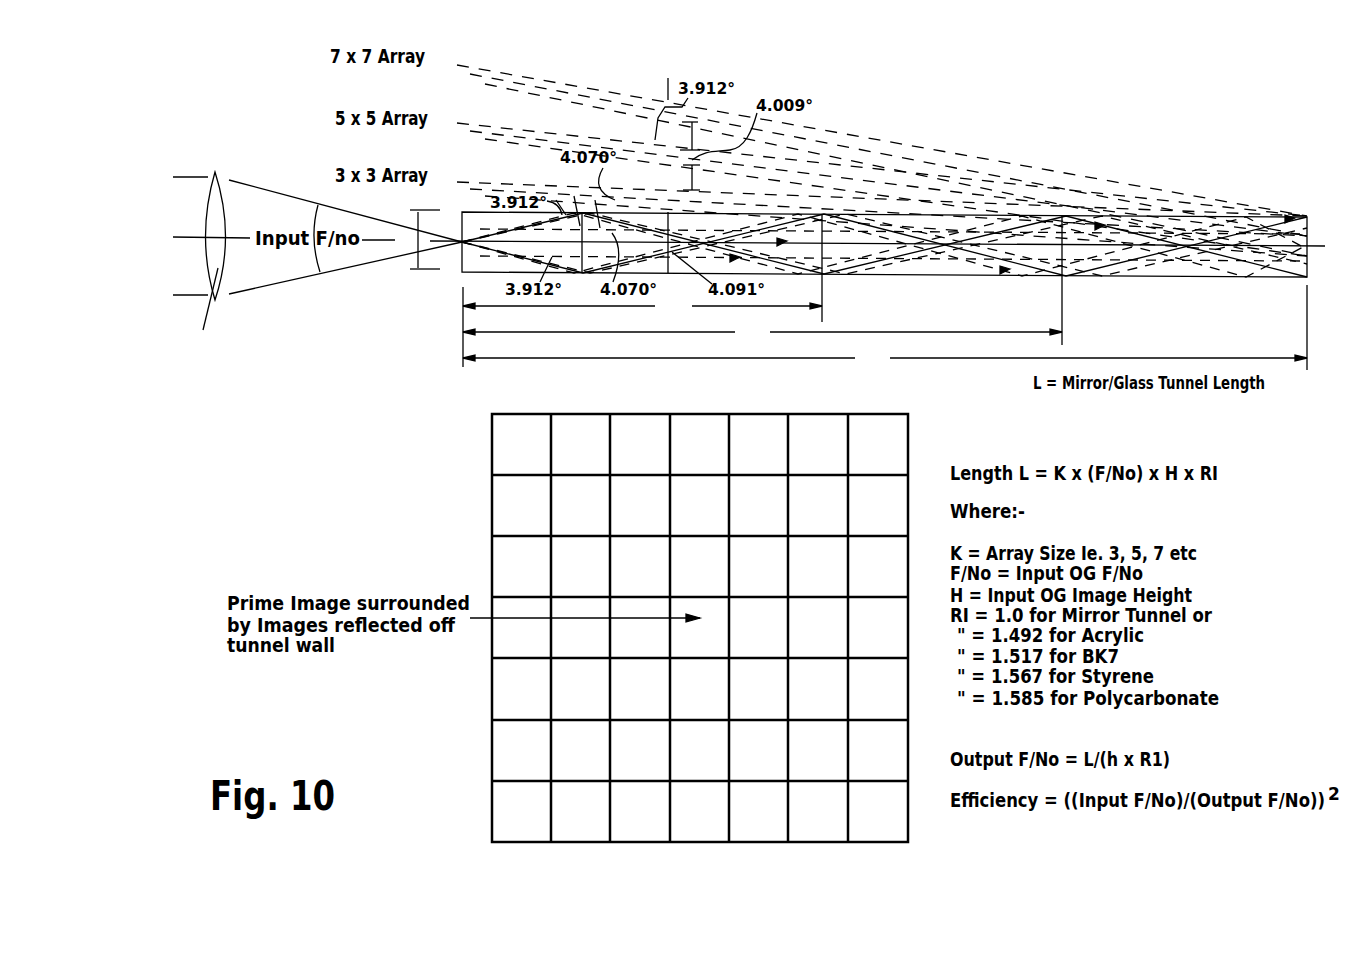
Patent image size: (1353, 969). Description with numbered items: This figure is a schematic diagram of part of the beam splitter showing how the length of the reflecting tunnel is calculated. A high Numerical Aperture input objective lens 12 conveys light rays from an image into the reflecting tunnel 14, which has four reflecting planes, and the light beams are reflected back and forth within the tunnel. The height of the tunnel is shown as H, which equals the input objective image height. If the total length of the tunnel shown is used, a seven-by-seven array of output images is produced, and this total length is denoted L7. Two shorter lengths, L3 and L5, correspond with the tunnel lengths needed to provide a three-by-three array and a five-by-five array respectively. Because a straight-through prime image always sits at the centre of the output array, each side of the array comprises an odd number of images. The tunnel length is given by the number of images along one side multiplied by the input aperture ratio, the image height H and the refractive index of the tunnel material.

The high Numerical Aperture objective lens 12 is at (215, 172).
The reflecting tunnel 14 is at (797, 276).
The height of the tunnel H is at (419, 239).
The tunnel length for 3×3 array L3 is at (642, 308).
The tunnel length for 5×5 array L5 is at (762, 334).
The tunnel length for 7×7 array L7 is at (885, 359).